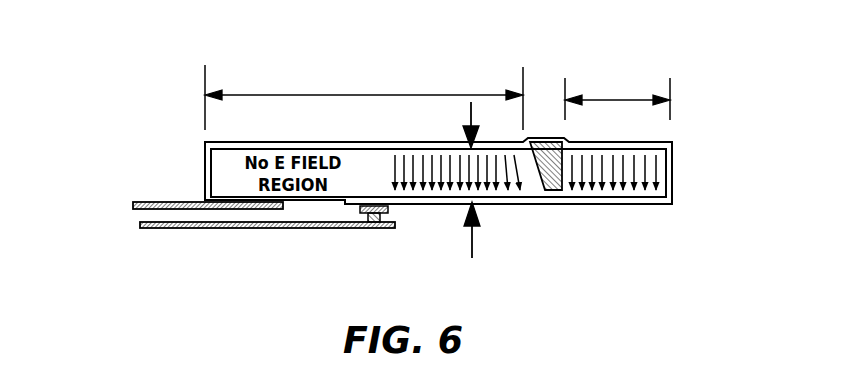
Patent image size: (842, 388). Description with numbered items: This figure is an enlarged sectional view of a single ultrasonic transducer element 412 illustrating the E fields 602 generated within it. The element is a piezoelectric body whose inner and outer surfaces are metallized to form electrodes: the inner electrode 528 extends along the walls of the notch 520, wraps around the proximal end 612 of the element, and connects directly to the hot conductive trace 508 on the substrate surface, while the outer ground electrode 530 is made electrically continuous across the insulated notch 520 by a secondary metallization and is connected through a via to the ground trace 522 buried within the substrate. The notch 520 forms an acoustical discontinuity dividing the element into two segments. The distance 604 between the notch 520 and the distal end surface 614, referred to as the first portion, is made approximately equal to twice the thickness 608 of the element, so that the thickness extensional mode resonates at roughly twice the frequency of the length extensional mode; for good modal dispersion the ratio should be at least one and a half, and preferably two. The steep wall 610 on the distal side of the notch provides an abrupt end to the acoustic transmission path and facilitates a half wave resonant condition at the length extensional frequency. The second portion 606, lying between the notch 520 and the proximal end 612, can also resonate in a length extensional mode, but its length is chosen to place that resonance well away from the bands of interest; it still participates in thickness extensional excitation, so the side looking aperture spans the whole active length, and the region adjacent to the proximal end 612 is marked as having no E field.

The transducer element 412 is at (363, 150).
The conductive trace 508 is at (133, 202).
The notch 520 is at (547, 150).
The conductive trace 522 is at (268, 229).
The inner electrode 528 is at (672, 143).
The ground electrode 530 is at (672, 205).
The E fields 602 is at (603, 171).
The distance 604 is at (618, 100).
The second portion 606 is at (367, 95).
The thickness 608 is at (473, 240).
The steep wall 610 is at (555, 172).
The proximal end 612 is at (184, 172).
The distal end surface 614 is at (673, 175).